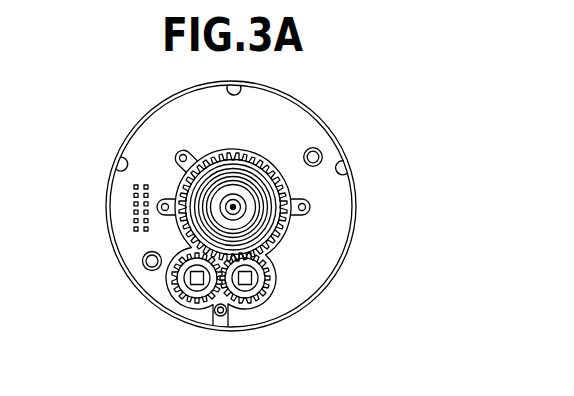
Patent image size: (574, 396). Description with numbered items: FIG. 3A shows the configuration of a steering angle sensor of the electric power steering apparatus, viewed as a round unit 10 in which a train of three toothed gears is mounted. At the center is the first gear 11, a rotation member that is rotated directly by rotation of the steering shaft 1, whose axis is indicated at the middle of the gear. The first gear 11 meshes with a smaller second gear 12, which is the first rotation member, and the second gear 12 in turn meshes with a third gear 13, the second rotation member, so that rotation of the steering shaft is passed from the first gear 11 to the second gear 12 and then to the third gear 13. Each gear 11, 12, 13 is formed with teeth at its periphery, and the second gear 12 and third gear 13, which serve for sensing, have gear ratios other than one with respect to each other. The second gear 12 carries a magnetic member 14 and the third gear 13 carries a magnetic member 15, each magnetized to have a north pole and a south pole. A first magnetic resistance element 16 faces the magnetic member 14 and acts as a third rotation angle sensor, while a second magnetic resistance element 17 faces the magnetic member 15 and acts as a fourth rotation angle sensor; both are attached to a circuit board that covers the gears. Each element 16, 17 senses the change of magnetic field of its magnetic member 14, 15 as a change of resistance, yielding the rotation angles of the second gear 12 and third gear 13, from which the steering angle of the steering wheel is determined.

The motor unit 10 is at (78, 122).
The steering shaft 1 is at (233, 207).
The first gear 11 is at (287, 185).
The second gear 12 is at (267, 252).
The third gear 13 is at (183, 252).
The magnetic member 14 is at (251, 278).
The magnetic member 15 is at (203, 283).
The first magnetic resistance element 16 is at (273, 288).
The second magnetic resistance element 17 is at (193, 276).